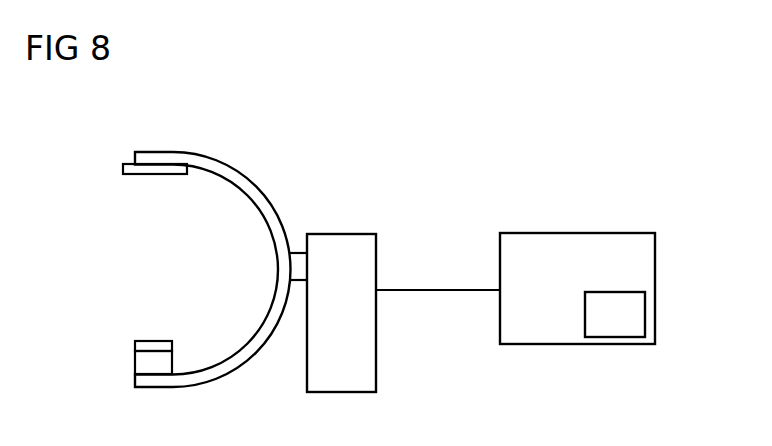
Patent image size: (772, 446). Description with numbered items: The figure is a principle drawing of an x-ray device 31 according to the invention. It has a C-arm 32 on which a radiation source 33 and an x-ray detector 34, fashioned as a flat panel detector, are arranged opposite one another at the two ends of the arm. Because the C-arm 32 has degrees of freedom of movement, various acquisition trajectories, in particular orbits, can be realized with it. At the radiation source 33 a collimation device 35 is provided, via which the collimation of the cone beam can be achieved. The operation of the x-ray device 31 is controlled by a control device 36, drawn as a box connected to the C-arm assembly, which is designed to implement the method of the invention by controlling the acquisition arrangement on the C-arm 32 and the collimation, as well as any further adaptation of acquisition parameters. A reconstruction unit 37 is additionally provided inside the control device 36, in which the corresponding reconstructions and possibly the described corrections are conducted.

The x-ray device 31 is at (285, 170).
The C-arm 32 is at (215, 167).
The radiation source 33 is at (135, 358).
The x-ray detector 34 is at (123, 170).
The collimation device 35 is at (135, 345).
The control device 36 is at (585, 233).
The reconstruction unit 37 is at (646, 312).